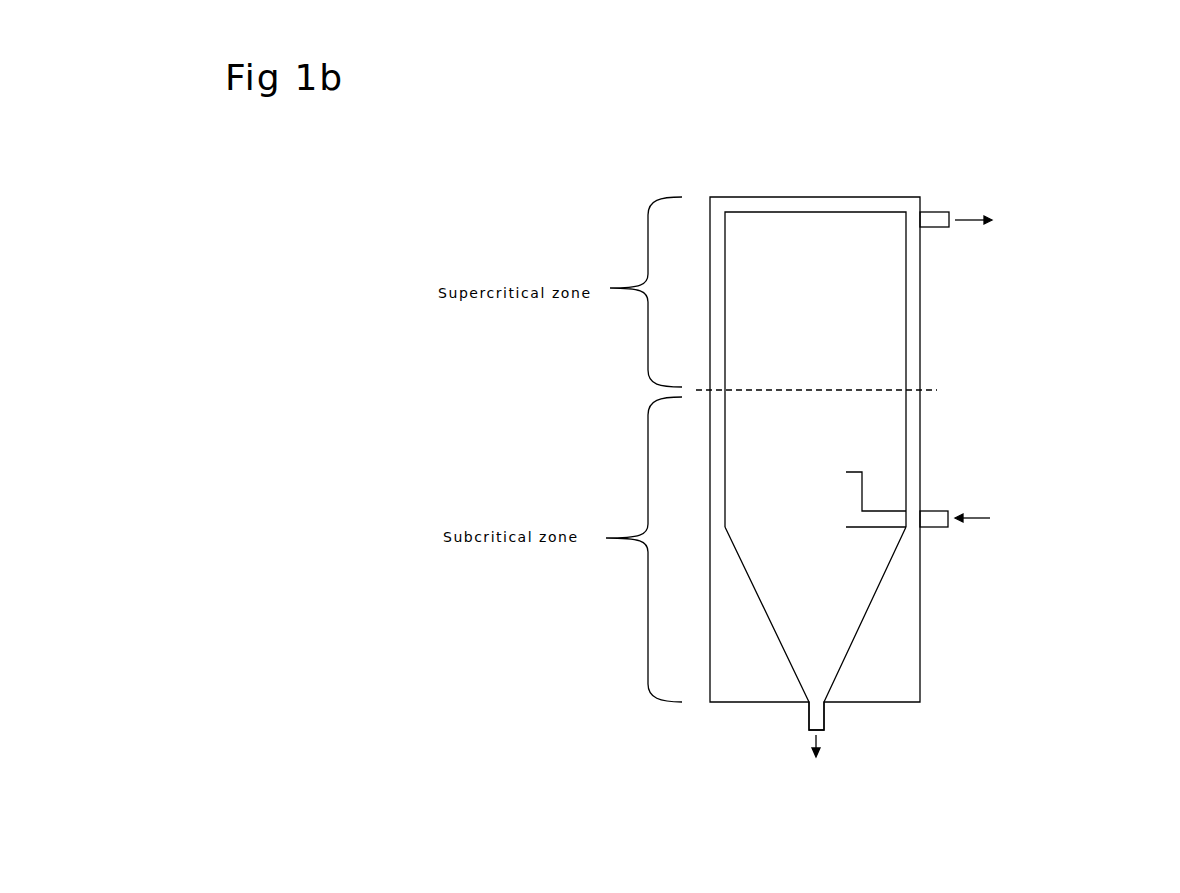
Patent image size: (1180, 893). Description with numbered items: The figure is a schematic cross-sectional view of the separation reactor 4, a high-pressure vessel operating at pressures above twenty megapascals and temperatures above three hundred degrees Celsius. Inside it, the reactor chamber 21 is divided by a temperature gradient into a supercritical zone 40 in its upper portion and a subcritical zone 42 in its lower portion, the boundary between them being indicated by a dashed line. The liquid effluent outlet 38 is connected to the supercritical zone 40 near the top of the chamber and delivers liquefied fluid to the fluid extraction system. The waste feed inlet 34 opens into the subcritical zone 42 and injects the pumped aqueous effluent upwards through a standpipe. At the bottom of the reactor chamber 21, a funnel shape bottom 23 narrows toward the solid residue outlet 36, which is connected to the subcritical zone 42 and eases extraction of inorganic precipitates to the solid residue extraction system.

The separation reactor 4 is at (1083, 148).
The reactor chamber 21 is at (905, 425).
The funnel shape bottom 23 is at (862, 627).
The supercritical zone 40 is at (868, 305).
The subcritical zone 42 is at (888, 465).
The liquid effluent outlet 38 is at (932, 214).
The waste feed inlet 34 is at (937, 528).
The solid residue outlet 36 is at (818, 718).